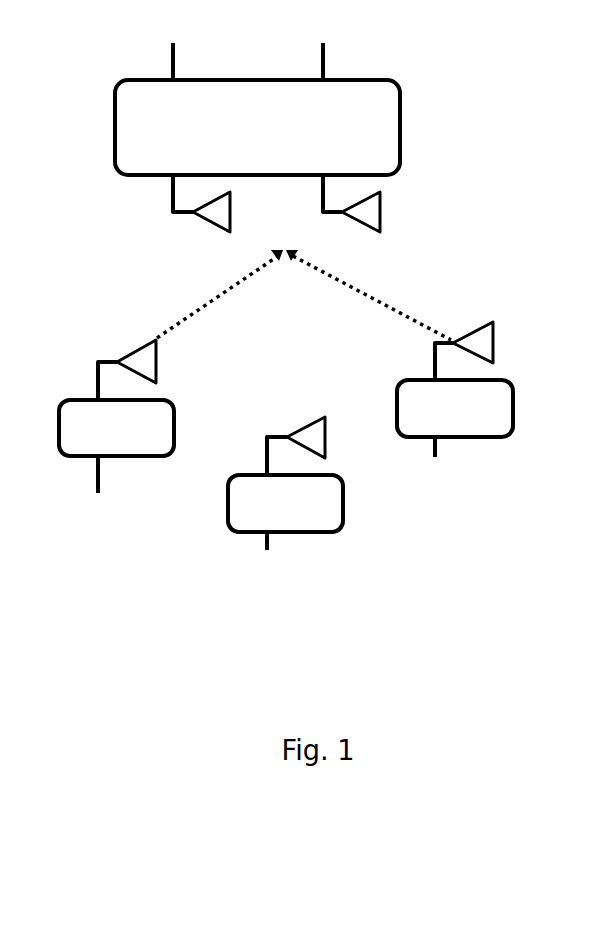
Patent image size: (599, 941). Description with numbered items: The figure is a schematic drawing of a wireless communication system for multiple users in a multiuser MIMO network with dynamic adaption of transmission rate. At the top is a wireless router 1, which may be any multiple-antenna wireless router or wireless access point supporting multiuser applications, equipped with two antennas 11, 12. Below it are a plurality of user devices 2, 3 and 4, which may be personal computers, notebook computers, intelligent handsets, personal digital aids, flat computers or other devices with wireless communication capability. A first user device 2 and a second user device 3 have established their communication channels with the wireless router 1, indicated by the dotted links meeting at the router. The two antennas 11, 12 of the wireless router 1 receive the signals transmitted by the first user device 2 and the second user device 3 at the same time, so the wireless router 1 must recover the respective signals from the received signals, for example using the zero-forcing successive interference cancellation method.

The wireless router 1 is at (257, 156).
The antenna 11 is at (180, 41).
The antenna 12 is at (332, 41).
The first user device 2 is at (116, 416).
The second user device 3 is at (455, 389).
The user device 4 is at (285, 483).